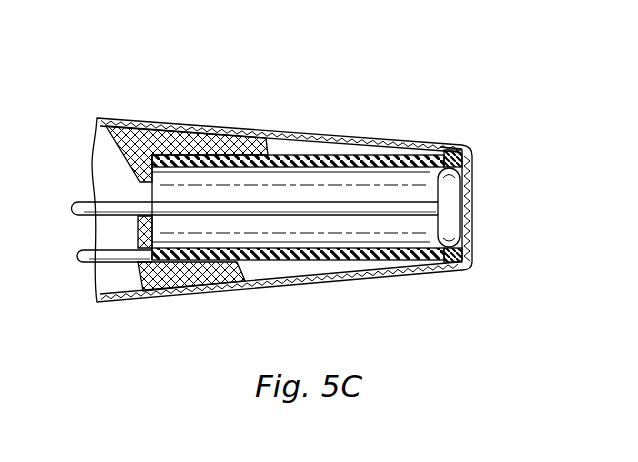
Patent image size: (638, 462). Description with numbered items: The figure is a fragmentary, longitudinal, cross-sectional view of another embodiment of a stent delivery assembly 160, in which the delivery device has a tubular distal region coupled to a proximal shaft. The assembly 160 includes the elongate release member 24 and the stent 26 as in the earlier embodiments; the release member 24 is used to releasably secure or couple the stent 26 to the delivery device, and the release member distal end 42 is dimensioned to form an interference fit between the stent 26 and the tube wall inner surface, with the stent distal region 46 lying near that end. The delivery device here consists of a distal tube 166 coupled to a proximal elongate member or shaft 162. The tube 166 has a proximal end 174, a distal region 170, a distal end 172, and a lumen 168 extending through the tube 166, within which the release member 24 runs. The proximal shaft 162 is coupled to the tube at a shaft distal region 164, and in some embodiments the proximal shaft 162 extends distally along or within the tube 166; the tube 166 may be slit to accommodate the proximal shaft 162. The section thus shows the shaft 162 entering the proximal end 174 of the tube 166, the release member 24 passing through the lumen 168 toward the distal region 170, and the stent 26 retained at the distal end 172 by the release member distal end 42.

The elongate release member 24 is at (74, 201).
The stent 26 is at (308, 125).
The release member distal end 42 is at (452, 212).
The stent distal region 46 is at (472, 252).
The stent delivery assembly 160 is at (428, 126).
The proximal elongate member or shaft 162 is at (117, 258).
The shaft distal region 164 is at (145, 300).
The distal tube 166 is at (288, 272).
The lumen 168 is at (375, 230).
The distal region 170 is at (407, 140).
The distal end 172 is at (466, 162).
The proximal end 174 is at (133, 128).